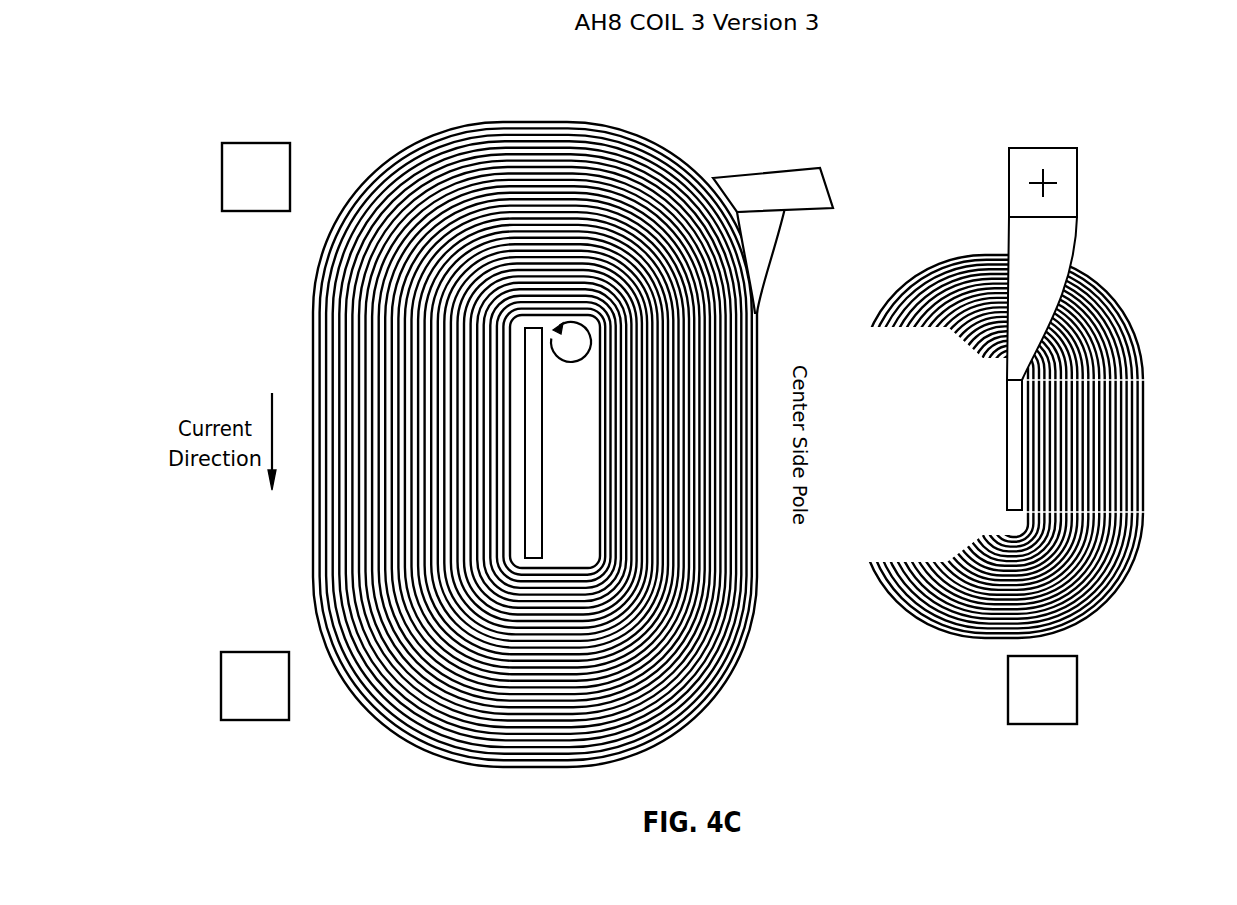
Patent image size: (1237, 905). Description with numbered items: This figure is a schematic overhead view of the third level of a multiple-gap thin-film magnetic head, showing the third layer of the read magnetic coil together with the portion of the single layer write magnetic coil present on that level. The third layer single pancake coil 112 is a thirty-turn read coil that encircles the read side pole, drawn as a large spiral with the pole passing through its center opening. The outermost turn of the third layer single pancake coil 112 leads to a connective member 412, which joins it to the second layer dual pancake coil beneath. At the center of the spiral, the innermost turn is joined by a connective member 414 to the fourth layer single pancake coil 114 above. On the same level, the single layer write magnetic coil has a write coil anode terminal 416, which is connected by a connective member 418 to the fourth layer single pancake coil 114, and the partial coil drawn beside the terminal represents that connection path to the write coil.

The third layer single pancake coil 112 is at (578, 123).
The fourth layer single pancake coil 114 is at (586, 563).
The connective member 412 is at (830, 178).
The connective member 414 is at (547, 521).
The write coil anode terminal 416 is at (1091, 165).
The connective member 418 is at (1023, 462).